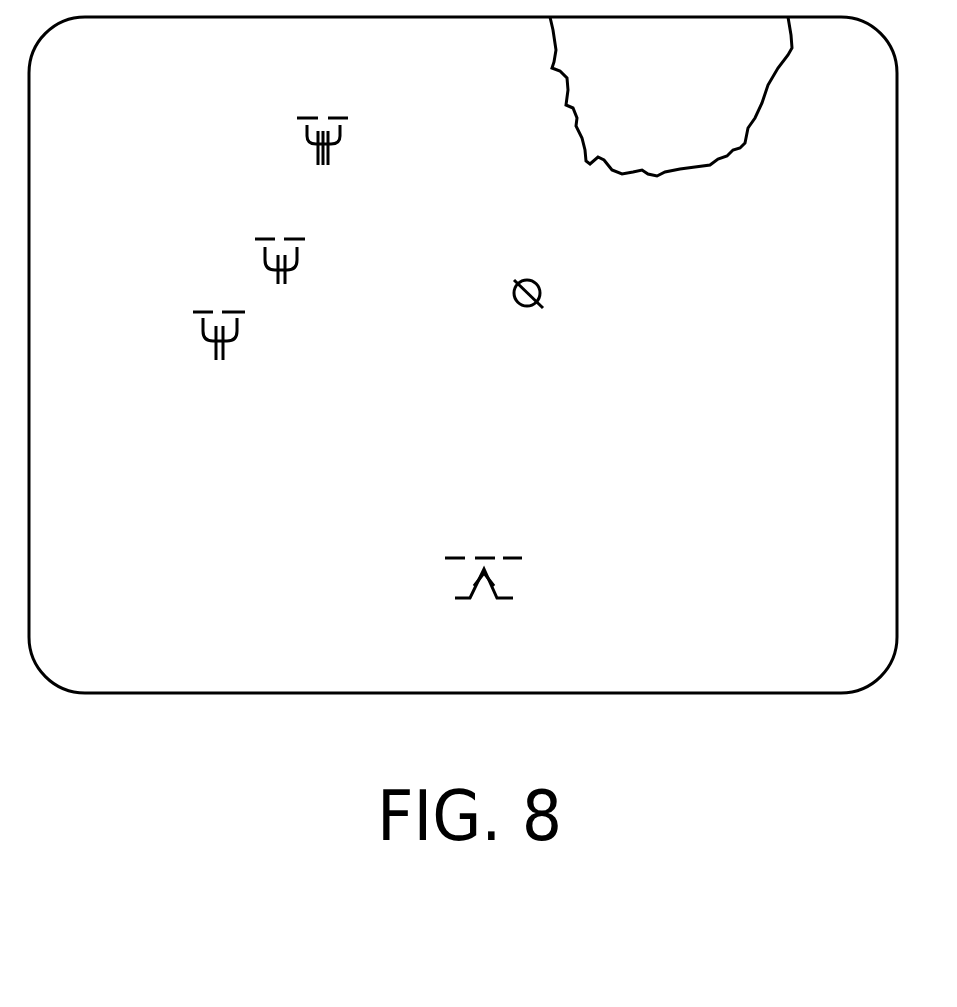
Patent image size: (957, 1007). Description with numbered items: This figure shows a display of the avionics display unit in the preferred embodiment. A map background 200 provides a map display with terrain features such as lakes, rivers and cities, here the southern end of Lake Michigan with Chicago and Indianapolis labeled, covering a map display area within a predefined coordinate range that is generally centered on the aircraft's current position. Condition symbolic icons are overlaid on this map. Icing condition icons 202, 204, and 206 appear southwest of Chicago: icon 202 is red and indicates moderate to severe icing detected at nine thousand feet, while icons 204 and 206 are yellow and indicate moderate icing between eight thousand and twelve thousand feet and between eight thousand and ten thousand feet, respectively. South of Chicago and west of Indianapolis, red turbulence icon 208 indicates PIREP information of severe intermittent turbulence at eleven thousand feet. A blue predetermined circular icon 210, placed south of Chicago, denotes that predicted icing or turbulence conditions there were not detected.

The map background 200 is at (797, 373).
The icing condition icon 202 is at (333, 107).
The icing condition icon 204 is at (280, 222).
The icing condition icon 206 is at (247, 372).
The turbulence condition icon 208 is at (545, 546).
The predetermined icon 210 is at (541, 291).